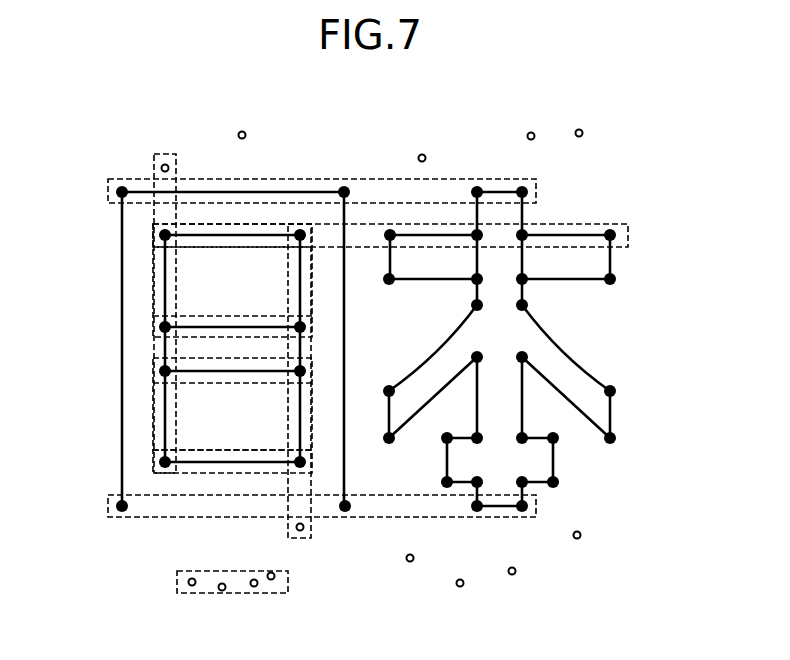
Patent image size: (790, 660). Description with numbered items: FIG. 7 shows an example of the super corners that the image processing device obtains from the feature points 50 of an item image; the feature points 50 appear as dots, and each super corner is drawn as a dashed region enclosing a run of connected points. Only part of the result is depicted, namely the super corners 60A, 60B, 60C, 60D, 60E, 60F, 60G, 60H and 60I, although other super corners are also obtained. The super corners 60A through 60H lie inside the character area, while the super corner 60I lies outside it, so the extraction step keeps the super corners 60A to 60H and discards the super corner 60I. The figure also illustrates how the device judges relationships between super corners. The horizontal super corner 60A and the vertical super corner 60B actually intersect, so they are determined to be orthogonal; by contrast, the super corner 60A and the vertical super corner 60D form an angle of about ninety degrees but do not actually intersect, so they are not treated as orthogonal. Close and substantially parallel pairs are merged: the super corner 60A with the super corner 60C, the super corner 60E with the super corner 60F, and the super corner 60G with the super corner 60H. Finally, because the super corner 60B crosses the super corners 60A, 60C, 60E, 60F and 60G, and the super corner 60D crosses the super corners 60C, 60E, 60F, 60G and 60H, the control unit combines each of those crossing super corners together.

The feature points 50 is at (122, 190).
The super corner 60A is at (108, 192).
The super corner 60B is at (163, 152).
The super corner 60C is at (630, 237).
The super corner 60D is at (305, 540).
The super corner 60E is at (237, 315).
The super corner 60F is at (200, 383).
The super corner 60G is at (272, 447).
The super corner 60H is at (136, 520).
The super corner 60I is at (243, 595).